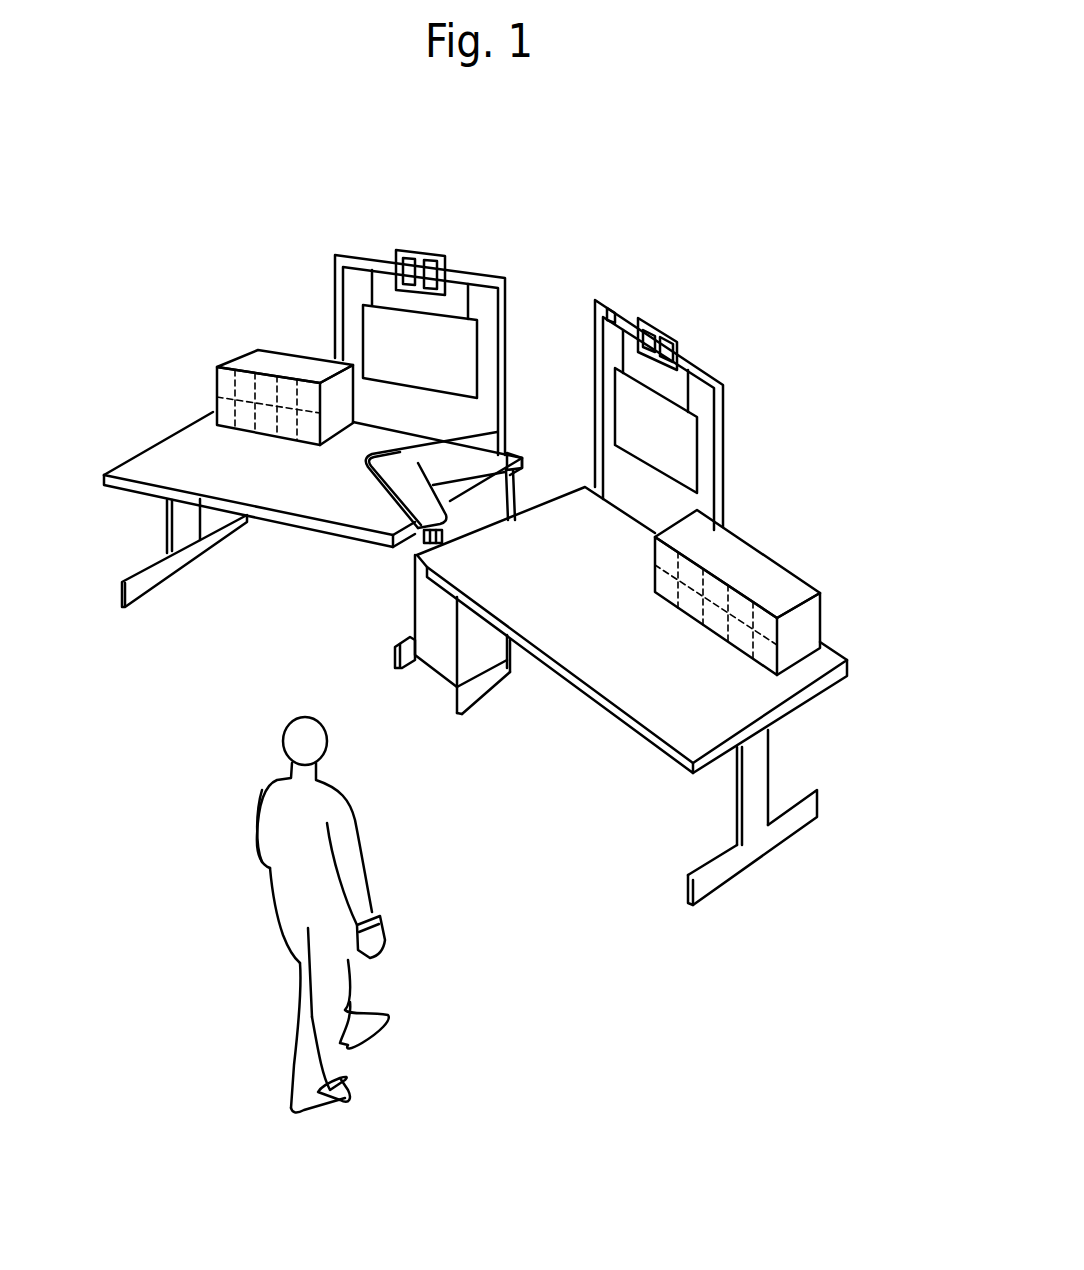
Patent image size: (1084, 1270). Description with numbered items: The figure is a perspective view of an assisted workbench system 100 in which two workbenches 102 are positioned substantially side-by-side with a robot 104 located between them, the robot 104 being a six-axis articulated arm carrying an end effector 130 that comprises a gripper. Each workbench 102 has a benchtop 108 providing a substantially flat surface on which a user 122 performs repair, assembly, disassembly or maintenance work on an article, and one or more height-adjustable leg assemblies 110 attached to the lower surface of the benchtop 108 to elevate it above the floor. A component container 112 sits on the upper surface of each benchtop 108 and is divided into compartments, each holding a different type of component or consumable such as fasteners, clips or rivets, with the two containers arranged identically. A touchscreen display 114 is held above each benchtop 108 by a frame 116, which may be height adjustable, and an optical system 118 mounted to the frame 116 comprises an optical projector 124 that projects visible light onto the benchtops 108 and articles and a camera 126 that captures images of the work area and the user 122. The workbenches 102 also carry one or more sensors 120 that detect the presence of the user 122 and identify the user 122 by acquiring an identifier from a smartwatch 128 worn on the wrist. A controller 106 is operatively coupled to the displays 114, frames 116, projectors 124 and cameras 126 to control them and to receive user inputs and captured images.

The assisted workbench system 100 is at (826, 221).
The workbench 102 is at (126, 453).
The robot 104 is at (485, 453).
The controller 106 is at (438, 650).
The benchtop 108 is at (188, 445).
The leg assembly 110 is at (138, 598).
The component container 112 is at (258, 358).
The display 114 is at (396, 328).
The frame 116 is at (340, 302).
The optical system 118 is at (420, 253).
The sensor 120 is at (612, 308).
The user 122 is at (343, 838).
The optical projector 124 is at (407, 257).
The camera 126 is at (432, 257).
The smartwatch 128 is at (377, 918).
The end effector 130 is at (415, 547).